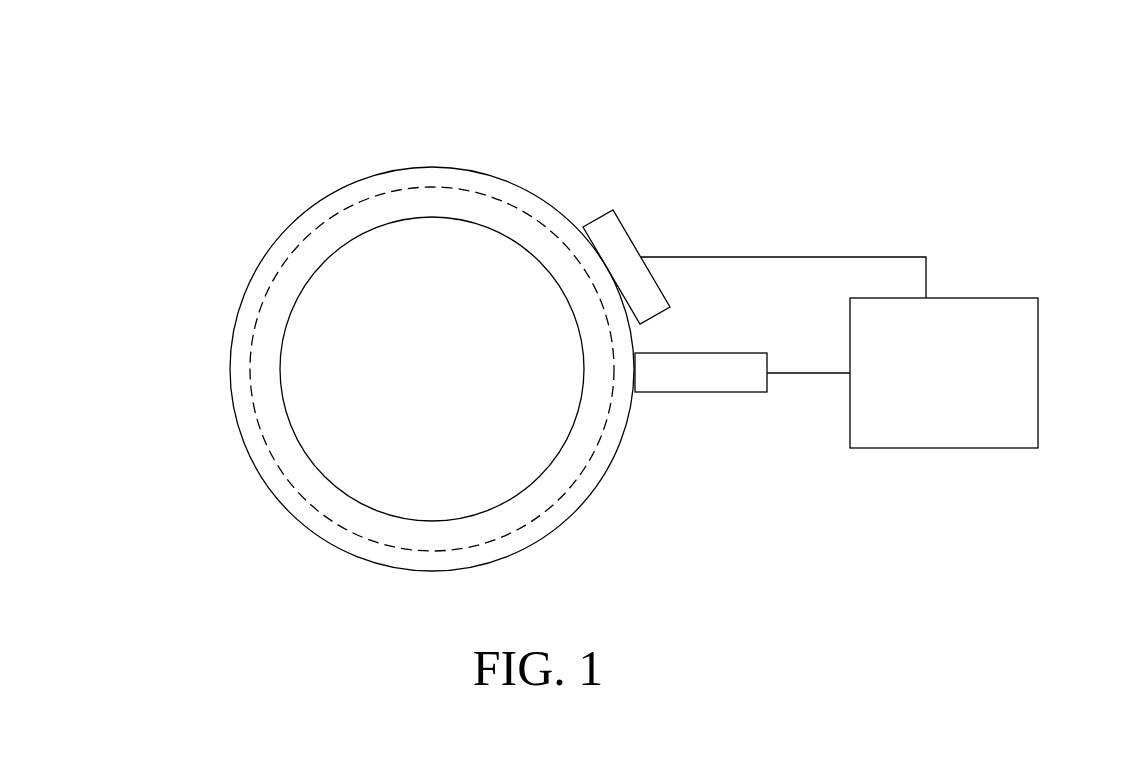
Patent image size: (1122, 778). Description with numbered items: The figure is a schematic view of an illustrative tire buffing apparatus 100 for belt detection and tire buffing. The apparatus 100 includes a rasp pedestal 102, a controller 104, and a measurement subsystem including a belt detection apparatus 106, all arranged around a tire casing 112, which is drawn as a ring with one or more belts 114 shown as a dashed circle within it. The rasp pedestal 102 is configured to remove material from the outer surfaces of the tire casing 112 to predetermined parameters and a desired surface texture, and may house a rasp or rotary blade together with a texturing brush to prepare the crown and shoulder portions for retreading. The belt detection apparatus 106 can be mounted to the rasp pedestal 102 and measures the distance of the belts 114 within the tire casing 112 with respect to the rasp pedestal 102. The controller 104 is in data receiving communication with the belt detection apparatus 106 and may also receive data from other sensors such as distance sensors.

The tire buffing apparatus 100 is at (672, 135).
The rasp pedestal 102 is at (746, 405).
The controller 104 is at (963, 307).
The belt detection apparatus 106 is at (674, 286).
The tire casing 112 is at (470, 172).
The belts 114 is at (557, 220).